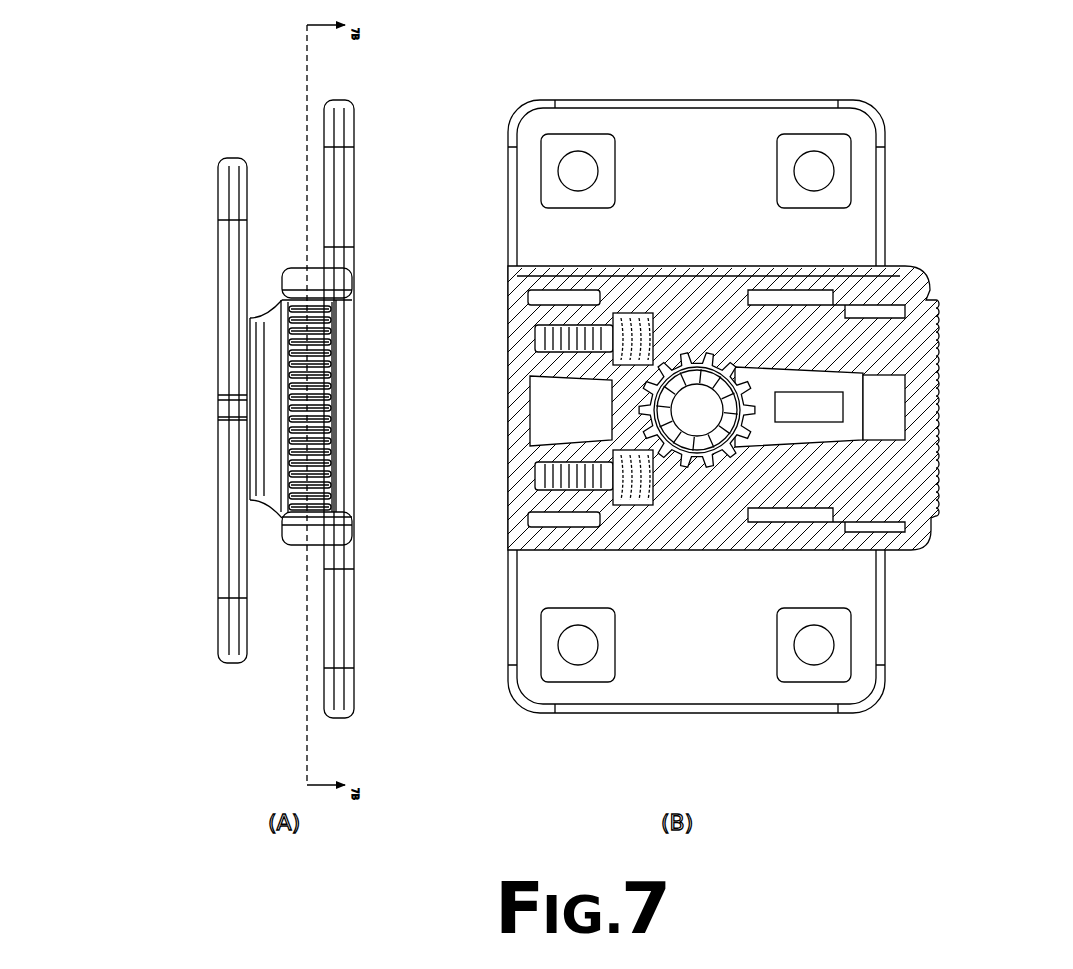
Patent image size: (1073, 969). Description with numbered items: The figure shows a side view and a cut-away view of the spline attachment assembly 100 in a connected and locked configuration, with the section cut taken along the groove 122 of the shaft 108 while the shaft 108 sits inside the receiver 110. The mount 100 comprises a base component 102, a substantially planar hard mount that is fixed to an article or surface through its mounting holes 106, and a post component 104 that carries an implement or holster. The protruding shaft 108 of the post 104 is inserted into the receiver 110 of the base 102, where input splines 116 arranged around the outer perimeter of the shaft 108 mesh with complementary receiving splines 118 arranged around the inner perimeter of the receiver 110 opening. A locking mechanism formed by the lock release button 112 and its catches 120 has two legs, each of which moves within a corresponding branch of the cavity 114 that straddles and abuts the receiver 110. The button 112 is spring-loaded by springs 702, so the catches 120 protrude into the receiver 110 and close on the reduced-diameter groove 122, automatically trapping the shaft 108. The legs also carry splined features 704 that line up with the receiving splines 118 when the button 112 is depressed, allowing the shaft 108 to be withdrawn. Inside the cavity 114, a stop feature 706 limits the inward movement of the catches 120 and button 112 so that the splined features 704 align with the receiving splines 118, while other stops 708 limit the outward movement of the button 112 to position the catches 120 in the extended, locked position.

The spline attachment assembly 100 is at (935, 88).
The base component 102 is at (325, 140).
The post component 104 is at (222, 175).
The mounting holes 106 is at (572, 167).
The shaft 108 is at (683, 410).
The receiver 110 is at (245, 448).
The lock release button 112 is at (354, 276).
The cavity 114 is at (318, 520).
The input splines 116 is at (640, 421).
The receiving splines 118 is at (722, 355).
The catch 120 is at (688, 358).
The groove 122 is at (655, 392).
The springs 702 is at (537, 333).
The splined features 704 is at (753, 350).
The stop feature 706 is at (865, 402).
The stops 708 is at (890, 570).